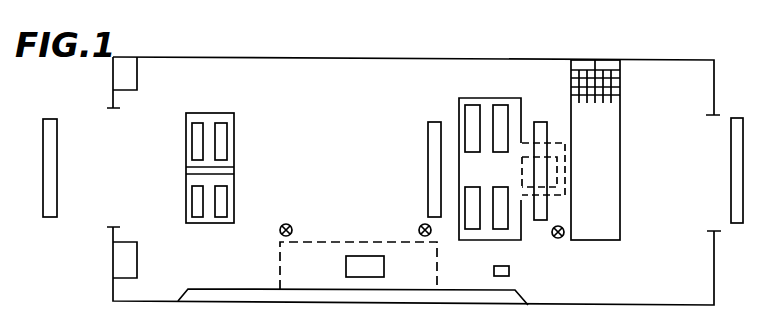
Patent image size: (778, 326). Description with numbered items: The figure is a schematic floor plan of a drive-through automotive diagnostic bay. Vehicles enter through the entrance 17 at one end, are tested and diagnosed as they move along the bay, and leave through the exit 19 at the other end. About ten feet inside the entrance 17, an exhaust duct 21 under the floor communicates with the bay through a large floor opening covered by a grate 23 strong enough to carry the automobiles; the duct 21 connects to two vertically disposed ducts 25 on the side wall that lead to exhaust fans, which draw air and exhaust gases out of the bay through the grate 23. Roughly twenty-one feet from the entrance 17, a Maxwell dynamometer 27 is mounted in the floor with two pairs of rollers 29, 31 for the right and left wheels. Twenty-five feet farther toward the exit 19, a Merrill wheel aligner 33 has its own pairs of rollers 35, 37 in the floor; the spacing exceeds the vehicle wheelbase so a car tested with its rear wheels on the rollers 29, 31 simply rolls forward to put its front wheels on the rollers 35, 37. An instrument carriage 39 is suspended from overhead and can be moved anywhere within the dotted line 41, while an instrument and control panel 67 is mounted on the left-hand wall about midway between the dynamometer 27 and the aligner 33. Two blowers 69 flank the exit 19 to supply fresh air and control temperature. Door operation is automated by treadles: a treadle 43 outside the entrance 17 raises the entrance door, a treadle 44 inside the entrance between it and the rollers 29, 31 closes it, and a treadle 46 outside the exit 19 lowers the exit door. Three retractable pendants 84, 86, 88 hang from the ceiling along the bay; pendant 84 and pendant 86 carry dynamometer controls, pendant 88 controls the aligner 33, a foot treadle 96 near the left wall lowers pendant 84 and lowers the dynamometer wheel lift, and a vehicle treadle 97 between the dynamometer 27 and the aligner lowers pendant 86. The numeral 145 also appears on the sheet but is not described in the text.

The entrance 17 is at (711, 143).
The exit 19 is at (87, 187).
The exhaust duct 21 is at (620, 165).
The grate 23 is at (613, 82).
The vertically disposed ducts 25 is at (604, 66).
The Maxwell dynamometer 27 is at (462, 165).
The pair of rollers 29 is at (501, 110).
The pair of rollers 31 is at (472, 225).
The Merrill wheel aligner 33 is at (228, 172).
The pair of rollers 35 is at (221, 130).
The pair of rollers 37 is at (197, 210).
The instrument carriage 39 is at (358, 262).
The dotted line 41 is at (432, 263).
The treadle 43 is at (731, 213).
The treadle 44 is at (540, 130).
The treadle 46 is at (51, 130).
The instrument and control panel 67 is at (425, 296).
The blowers 69 is at (131, 80).
The pendant 84 is at (556, 239).
The pendant 86 is at (419, 232).
The pendant 88 is at (291, 227).
The foot treadle 96 is at (509, 271).
The vehicle treadle 97 is at (433, 131).
The conduit 145 is at (126, 321).